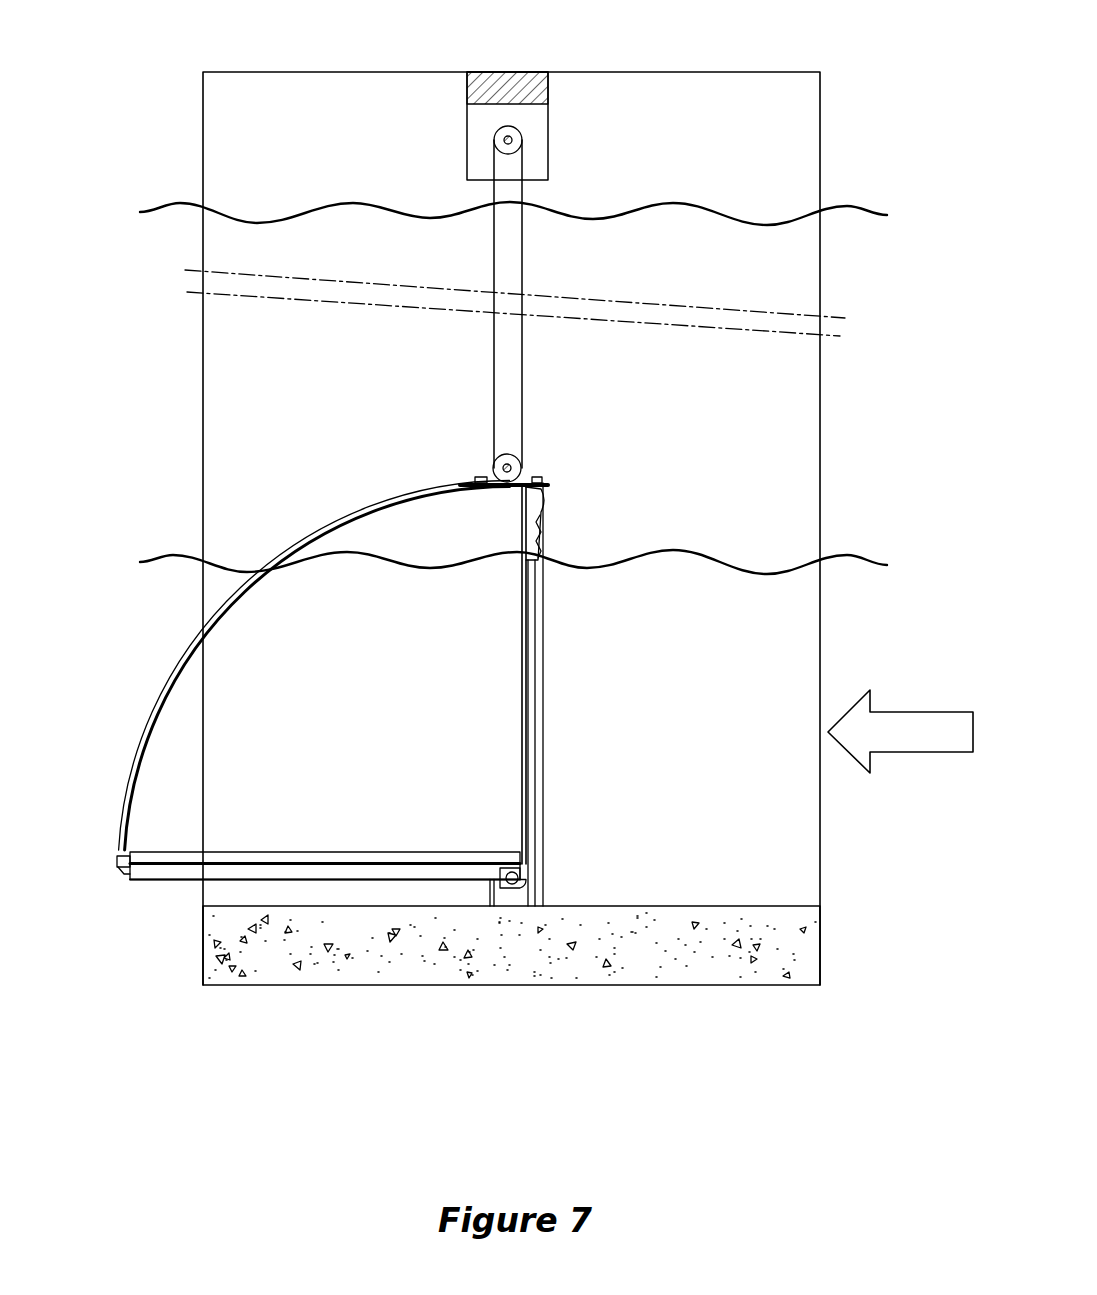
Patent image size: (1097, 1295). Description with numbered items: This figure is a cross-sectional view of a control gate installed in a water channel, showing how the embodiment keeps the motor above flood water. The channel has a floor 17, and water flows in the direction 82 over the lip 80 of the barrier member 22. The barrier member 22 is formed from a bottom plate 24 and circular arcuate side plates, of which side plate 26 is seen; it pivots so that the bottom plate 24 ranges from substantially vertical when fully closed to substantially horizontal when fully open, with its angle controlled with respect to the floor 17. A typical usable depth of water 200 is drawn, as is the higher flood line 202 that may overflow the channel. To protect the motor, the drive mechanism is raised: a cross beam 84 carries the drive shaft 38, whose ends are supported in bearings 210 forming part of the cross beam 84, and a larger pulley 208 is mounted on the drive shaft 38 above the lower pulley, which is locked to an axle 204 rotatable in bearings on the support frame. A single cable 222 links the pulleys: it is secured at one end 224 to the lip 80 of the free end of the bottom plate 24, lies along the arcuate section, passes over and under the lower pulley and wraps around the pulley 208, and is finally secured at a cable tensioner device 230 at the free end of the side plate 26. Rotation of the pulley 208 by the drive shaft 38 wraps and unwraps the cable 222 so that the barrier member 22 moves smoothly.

The floor 17 is at (735, 906).
The barrier member 22 is at (350, 694).
The bottom plate 24 is at (370, 851).
The circular arcuate side plate 26 is at (380, 708).
The drive shaft 38 is at (513, 140).
The lip 80 is at (117, 860).
The flow direction 82 is at (956, 747).
The cross beam 84 is at (508, 72).
The usable depth of water 200 is at (180, 556).
The flood line 202 is at (180, 208).
The axle 204 is at (521, 468).
The pulley 208 is at (519, 131).
The bearing 210 is at (545, 170).
The cable 222 is at (524, 197).
The cable end 224 is at (120, 870).
The cable tensioner device 230 is at (540, 496).